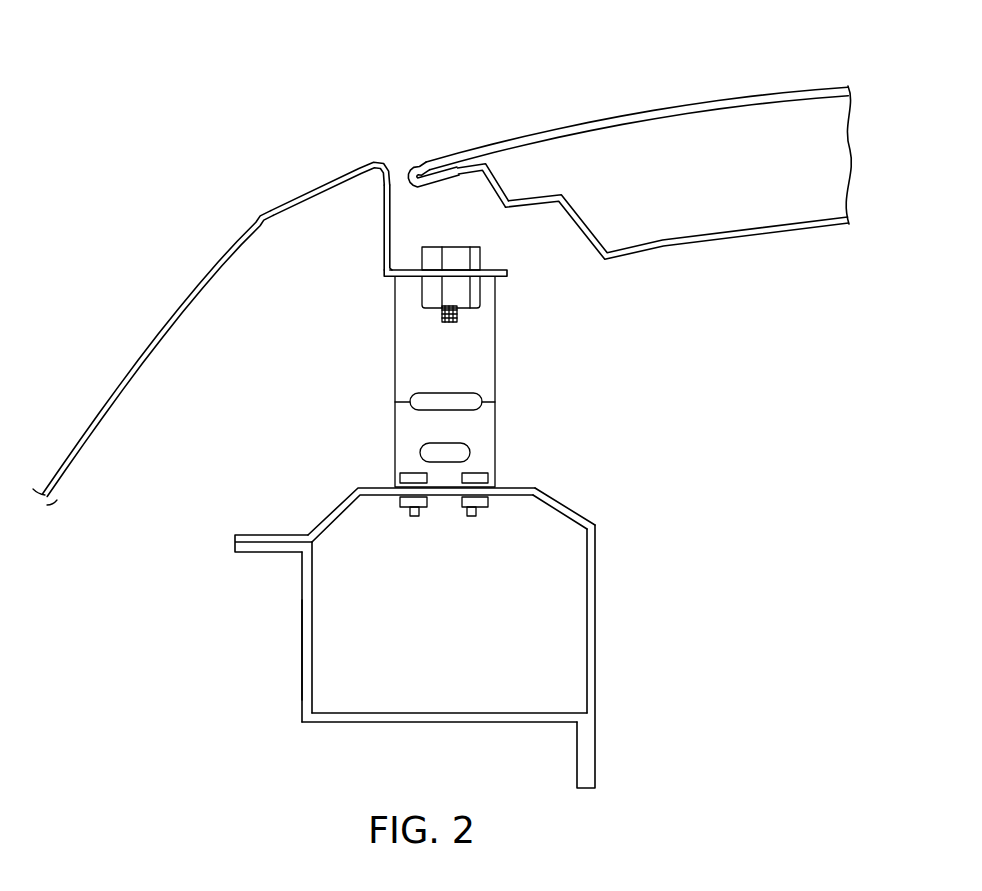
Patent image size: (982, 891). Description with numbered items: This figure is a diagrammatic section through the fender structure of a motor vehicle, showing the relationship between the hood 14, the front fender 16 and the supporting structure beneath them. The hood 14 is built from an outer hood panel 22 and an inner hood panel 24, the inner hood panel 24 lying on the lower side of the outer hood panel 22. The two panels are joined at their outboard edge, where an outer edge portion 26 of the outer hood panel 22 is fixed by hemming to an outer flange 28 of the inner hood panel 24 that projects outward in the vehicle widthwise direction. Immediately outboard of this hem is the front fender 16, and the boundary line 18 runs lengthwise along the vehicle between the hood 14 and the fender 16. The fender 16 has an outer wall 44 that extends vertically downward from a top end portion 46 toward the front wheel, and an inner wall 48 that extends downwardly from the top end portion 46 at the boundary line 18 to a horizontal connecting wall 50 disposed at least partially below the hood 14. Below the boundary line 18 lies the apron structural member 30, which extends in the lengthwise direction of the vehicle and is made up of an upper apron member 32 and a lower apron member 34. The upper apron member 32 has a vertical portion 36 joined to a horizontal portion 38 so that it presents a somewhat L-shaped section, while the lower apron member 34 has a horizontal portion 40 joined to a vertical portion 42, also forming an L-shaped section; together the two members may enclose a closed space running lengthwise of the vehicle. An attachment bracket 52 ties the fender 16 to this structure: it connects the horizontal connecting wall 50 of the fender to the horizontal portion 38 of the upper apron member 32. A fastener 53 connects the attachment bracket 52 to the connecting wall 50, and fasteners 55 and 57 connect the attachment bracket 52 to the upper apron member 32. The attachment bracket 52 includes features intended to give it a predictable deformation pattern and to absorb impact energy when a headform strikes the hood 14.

The hood 14 is at (626, 159).
The front fender 16 is at (301, 311).
The boundary line 18 is at (396, 161).
The outer hood panel 22 is at (722, 108).
The inner hood panel 24 is at (733, 240).
The outer edge portion 26 is at (411, 162).
The outer flange 28 is at (460, 167).
The apron structural member 30 is at (445, 613).
The upper apron member 32 is at (337, 507).
The lower apron member 34 is at (300, 645).
The vertical portion 36 is at (597, 617).
The horizontal portion 38 is at (542, 489).
The horizontal portion 40 is at (443, 713).
The vertical portion 42 is at (302, 608).
The outer wall 44 is at (150, 343).
The top end portion 46 is at (372, 163).
The inner wall 48 is at (383, 224).
The horizontal connecting wall 50 is at (507, 273).
The attachment bracket 52 is at (490, 355).
The fastener 53 is at (422, 296).
The fastener 55 is at (420, 513).
The fastener 57 is at (480, 513).